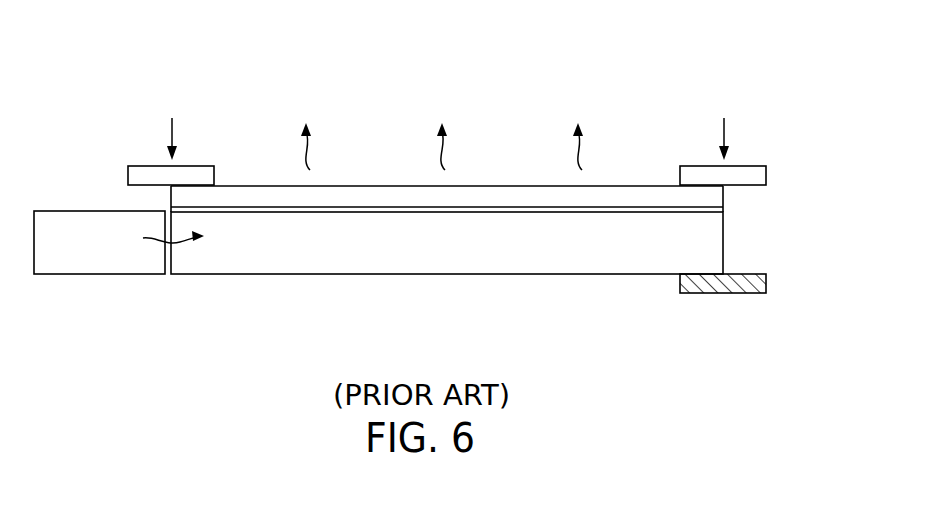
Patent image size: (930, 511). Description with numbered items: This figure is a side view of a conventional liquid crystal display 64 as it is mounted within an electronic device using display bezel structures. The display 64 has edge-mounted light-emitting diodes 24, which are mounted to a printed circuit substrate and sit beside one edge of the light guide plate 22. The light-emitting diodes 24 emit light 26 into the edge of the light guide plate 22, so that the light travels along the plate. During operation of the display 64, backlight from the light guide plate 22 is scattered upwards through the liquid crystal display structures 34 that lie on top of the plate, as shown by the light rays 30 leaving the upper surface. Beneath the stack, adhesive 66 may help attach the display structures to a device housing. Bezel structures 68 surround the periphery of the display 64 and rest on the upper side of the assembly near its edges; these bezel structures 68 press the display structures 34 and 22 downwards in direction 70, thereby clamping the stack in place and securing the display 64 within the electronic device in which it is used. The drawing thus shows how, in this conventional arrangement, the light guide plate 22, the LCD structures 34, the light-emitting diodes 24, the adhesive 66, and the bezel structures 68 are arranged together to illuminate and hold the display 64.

The light guide plate 22 is at (725, 233).
The light-emitting diodes 24 is at (98, 275).
The light 26 is at (173, 243).
The light rays 30 is at (578, 142).
The liquid crystal display structures 34 is at (620, 190).
The display 64 is at (692, 46).
The adhesive 66 is at (732, 293).
The bezel structures 68 is at (147, 165).
The direction 70 is at (172, 129).